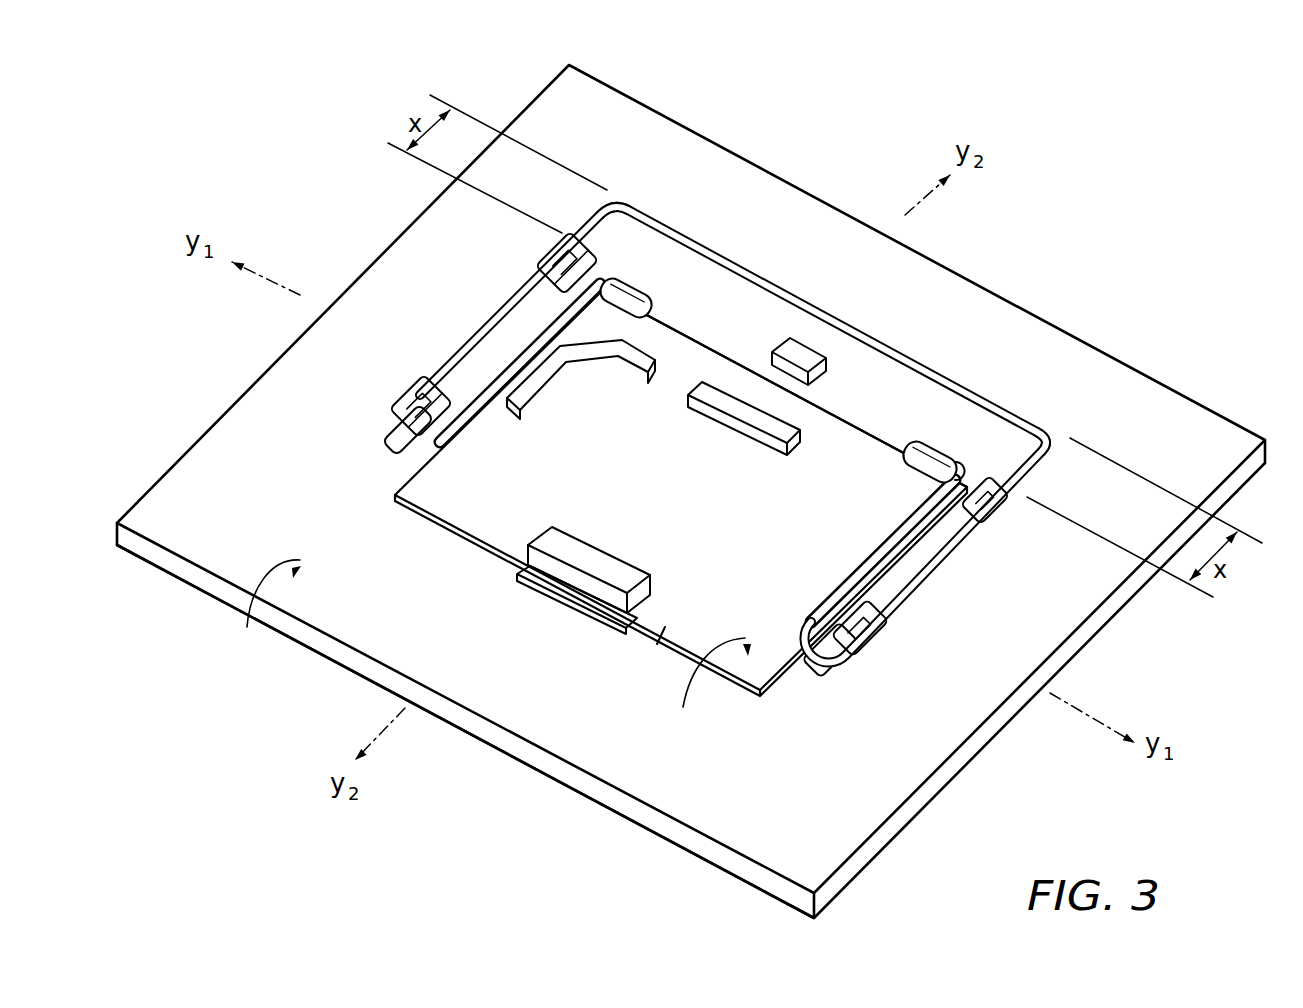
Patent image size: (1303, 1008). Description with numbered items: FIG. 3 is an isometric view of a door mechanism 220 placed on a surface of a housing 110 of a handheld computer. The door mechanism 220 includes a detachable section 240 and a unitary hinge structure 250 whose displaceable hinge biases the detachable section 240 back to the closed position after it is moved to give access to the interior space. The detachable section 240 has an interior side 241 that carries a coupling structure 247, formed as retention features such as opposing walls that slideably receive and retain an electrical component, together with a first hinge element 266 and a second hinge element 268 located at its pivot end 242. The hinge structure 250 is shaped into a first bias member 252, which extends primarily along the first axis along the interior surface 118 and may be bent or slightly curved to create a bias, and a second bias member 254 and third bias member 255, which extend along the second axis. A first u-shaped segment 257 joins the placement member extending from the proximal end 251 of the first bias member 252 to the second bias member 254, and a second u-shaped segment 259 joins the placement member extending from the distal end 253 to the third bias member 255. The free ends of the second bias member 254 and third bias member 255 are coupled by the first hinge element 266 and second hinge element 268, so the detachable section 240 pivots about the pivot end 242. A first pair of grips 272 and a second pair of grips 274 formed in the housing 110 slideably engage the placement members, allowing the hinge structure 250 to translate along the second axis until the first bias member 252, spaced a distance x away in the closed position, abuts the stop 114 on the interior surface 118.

The housing 110 is at (200, 608).
The stop 114 is at (787, 352).
The interior surface 118 is at (264, 615).
The door mechanism 220 is at (333, 697).
The detachable section 240 is at (681, 439).
The interior side 241 is at (515, 504).
The pivot end 242 is at (690, 340).
The coupling structure 247 is at (548, 377).
The hinge structure 250 is at (716, 412).
The proximal end 251 is at (620, 198).
The first bias member 252 is at (867, 330).
The distal end 253 is at (1058, 438).
The second bias member 254 is at (505, 370).
The third bias member 255 is at (860, 570).
The first u-shaped segment 257 is at (387, 432).
The second u-shaped segment 259 is at (825, 668).
The first hinge element 266 is at (630, 288).
The second hinge element 268 is at (927, 450).
The first pair of grips 272 is at (567, 262).
The second pair of grips 274 is at (867, 620).